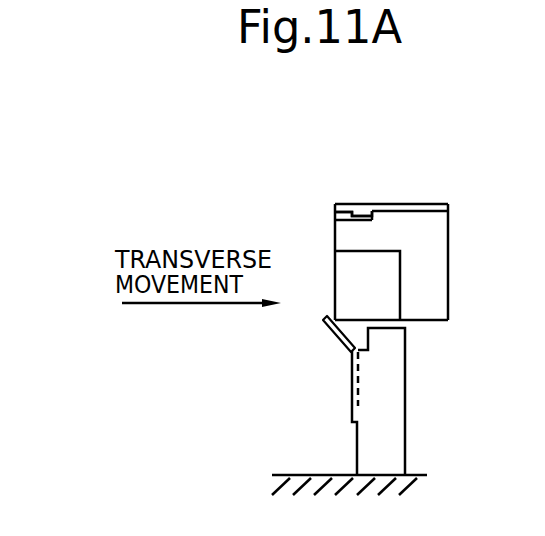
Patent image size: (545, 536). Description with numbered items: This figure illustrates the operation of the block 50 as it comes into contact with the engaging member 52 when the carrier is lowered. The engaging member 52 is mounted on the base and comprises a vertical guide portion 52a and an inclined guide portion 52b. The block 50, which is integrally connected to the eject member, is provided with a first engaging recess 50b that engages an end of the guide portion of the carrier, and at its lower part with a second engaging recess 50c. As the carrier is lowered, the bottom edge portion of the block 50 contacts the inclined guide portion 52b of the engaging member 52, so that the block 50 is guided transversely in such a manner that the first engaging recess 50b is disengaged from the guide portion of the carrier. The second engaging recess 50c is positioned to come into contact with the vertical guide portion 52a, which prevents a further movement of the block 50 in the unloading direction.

The block 50 is at (427, 196).
The first engaging recess 50b is at (340, 212).
The second engaging recess 50c is at (387, 283).
The engaging member 52 is at (416, 459).
The vertical guide portion 52a is at (392, 393).
The inclined guide portion 52b is at (330, 324).